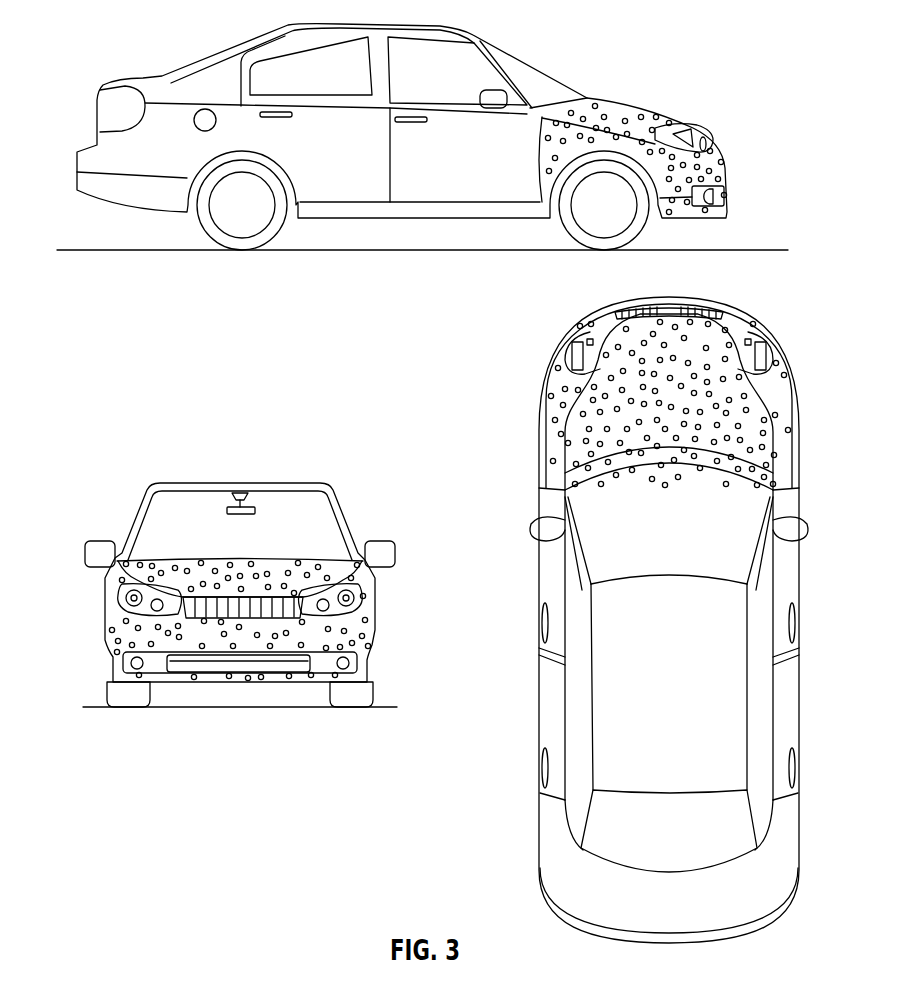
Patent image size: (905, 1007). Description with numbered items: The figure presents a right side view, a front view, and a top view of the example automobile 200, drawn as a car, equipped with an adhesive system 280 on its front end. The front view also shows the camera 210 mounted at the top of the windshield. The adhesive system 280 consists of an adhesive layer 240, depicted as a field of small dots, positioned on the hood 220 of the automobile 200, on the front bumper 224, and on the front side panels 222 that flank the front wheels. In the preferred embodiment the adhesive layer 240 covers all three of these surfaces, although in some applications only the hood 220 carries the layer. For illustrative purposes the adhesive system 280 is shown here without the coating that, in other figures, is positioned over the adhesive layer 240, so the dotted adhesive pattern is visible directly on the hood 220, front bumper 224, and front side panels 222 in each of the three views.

The automobile 200 is at (74, 70).
The camera 210 is at (250, 498).
The hood 220 is at (642, 122).
The front side panels 222 is at (575, 135).
The front bumper 224 is at (707, 167).
The adhesive layer 240 is at (597, 113).
The adhesive system 280 is at (712, 103).